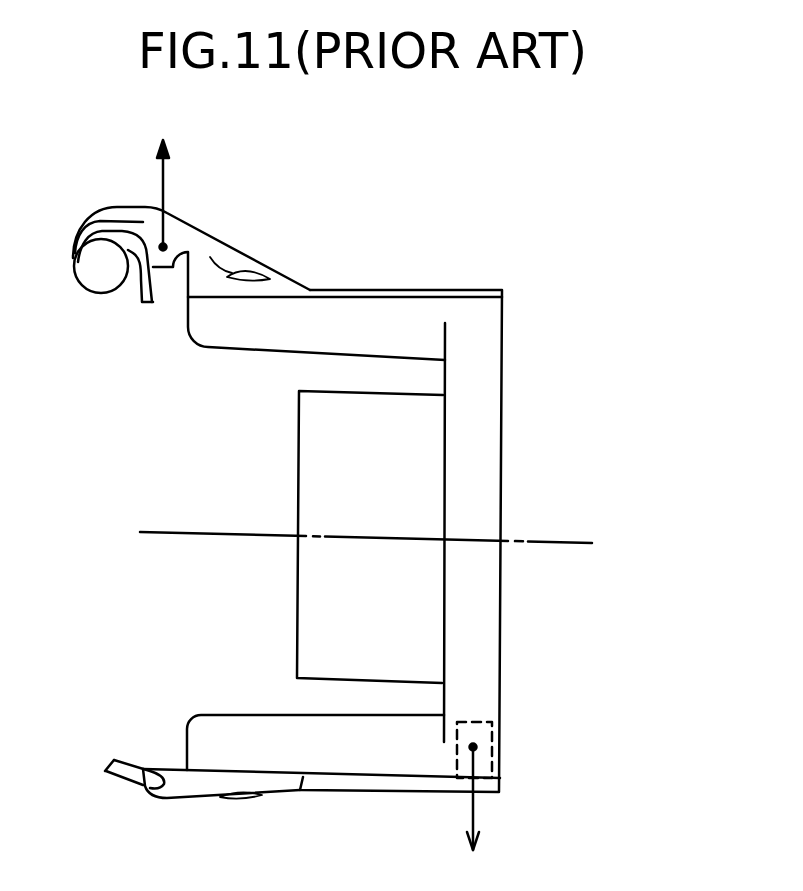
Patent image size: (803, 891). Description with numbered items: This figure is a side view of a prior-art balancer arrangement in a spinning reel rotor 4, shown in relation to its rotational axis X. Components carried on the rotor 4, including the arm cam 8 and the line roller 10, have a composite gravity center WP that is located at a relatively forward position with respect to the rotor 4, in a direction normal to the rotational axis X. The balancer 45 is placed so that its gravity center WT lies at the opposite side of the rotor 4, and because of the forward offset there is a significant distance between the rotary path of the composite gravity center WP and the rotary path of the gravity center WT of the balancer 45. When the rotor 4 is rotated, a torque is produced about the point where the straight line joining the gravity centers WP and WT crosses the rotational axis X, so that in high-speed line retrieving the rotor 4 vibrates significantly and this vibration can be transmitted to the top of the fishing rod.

The rotor 4 is at (503, 362).
The arm cam 8 is at (240, 247).
The line roller 10 is at (95, 235).
The balancer 45 is at (458, 753).
The composite gravity center Wp is at (163, 247).
The gravity center of the balancer Wt is at (473, 747).
The rotational axis X is at (355, 532).